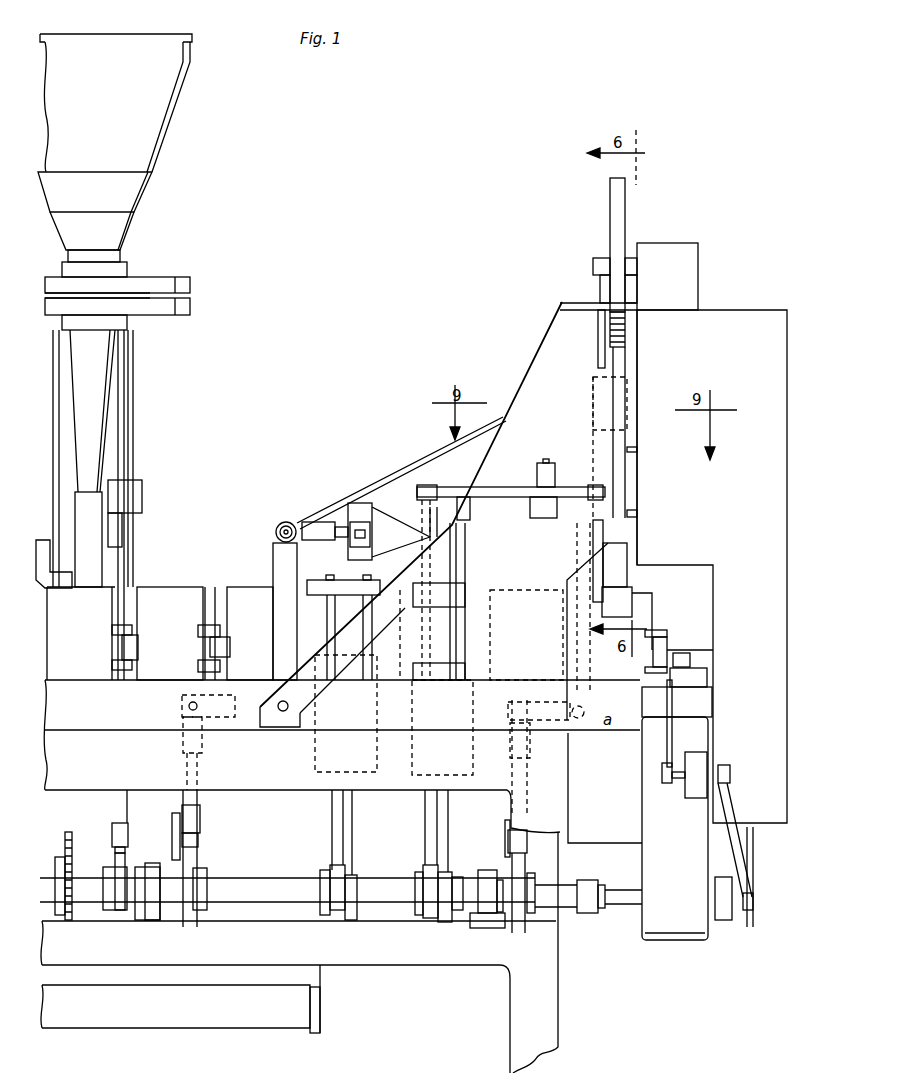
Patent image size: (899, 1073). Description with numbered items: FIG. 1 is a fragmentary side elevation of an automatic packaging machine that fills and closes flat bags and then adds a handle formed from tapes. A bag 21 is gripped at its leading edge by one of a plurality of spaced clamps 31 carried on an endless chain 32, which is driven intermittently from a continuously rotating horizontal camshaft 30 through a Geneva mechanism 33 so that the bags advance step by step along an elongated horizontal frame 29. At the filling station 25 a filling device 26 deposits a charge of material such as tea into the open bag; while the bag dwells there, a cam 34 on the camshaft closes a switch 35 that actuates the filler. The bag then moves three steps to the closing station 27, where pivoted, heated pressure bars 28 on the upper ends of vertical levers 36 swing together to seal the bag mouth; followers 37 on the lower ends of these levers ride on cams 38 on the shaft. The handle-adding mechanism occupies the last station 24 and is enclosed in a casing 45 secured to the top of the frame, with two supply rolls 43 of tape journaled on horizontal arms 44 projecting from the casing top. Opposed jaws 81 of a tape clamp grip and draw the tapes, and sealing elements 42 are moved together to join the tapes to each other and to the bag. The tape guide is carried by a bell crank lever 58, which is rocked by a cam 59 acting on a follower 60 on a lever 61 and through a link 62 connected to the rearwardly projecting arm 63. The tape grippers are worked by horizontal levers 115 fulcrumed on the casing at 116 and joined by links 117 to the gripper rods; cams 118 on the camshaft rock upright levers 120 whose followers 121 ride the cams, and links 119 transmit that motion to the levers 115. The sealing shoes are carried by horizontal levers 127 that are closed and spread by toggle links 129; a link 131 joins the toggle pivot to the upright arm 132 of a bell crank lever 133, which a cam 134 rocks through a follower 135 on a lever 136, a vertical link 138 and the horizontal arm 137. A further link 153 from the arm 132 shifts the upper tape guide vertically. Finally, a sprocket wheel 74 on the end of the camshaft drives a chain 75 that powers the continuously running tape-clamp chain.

The bag 21 is at (227, 592).
The last station 24 is at (654, 582).
The filling station 25 is at (114, 576).
The filling device 26 is at (137, 272).
The closing station 27 is at (348, 580).
The pressure bars 28 is at (341, 621).
The frame 29 is at (558, 982).
The camshaft 30 is at (283, 880).
The clamps 31 is at (134, 646).
The endless chain 32 is at (700, 683).
The Geneva mechanism 33 is at (683, 942).
The cam 34 is at (118, 913).
The switch 35 is at (111, 832).
The vertical levers 36 is at (350, 672).
The followers 37 is at (335, 890).
The cams 38 is at (358, 925).
The sealing elements 42 is at (622, 493).
The supply rolls 43 is at (612, 209).
The horizontal arms 44 is at (595, 290).
The casing 45 is at (532, 349).
The bell crank lever 58 is at (585, 712).
The cam 59 is at (512, 930).
The follower 60 is at (510, 843).
The lever 61 is at (505, 835).
The link 62 is at (512, 777).
The rearwardly projecting arm 63 is at (530, 655).
The sprocket wheel 74 is at (738, 920).
The chain 75 is at (753, 868).
The jaws 81 is at (633, 447).
The horizontal levers 115 is at (510, 490).
The fulcrums 116 is at (543, 462).
The links 117 is at (590, 486).
The cams 118 is at (442, 922).
The link 119 is at (436, 490).
The upright lever 120 is at (425, 522).
The follower 121 is at (424, 884).
The horizontal levers 127 is at (468, 498).
The toggle links 129 is at (352, 541).
The link 131 is at (324, 524).
The upright arm 132 is at (275, 568).
The bell crank lever 133 is at (275, 732).
The cam 134 is at (198, 861).
The follower 135 is at (200, 844).
The lever 136 is at (172, 841).
The horizontal arm 137 is at (235, 718).
The vertical link 138 is at (200, 767).
The link 153 is at (410, 466).